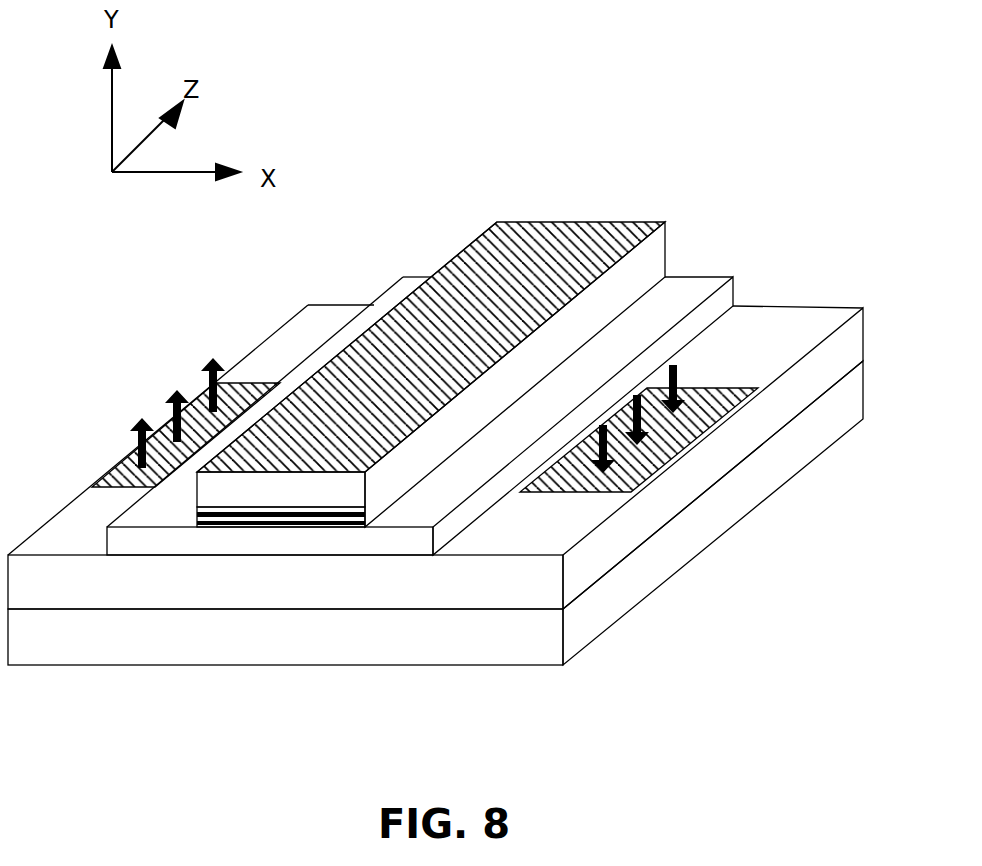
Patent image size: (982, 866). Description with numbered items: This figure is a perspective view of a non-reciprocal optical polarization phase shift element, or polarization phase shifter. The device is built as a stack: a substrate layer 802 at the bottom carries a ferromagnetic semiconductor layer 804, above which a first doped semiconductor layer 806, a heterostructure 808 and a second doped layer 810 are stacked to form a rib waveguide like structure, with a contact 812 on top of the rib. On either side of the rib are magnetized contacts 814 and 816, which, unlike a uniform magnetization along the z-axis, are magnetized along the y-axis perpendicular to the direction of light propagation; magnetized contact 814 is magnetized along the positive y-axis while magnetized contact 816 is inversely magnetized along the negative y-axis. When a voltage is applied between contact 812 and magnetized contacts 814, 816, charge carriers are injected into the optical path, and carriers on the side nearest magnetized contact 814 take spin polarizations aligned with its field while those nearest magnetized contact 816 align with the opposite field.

The substrate layer 802 is at (398, 655).
The ferromagnetic semiconductor layer 804 is at (540, 598).
The first doped semiconductor layer 806 is at (150, 555).
The heterostructure 808 is at (367, 523).
The second doped layer 810 is at (292, 504).
The contact 812 is at (570, 221).
The magnetized contact 814 is at (112, 477).
The magnetized contact 816 is at (753, 388).